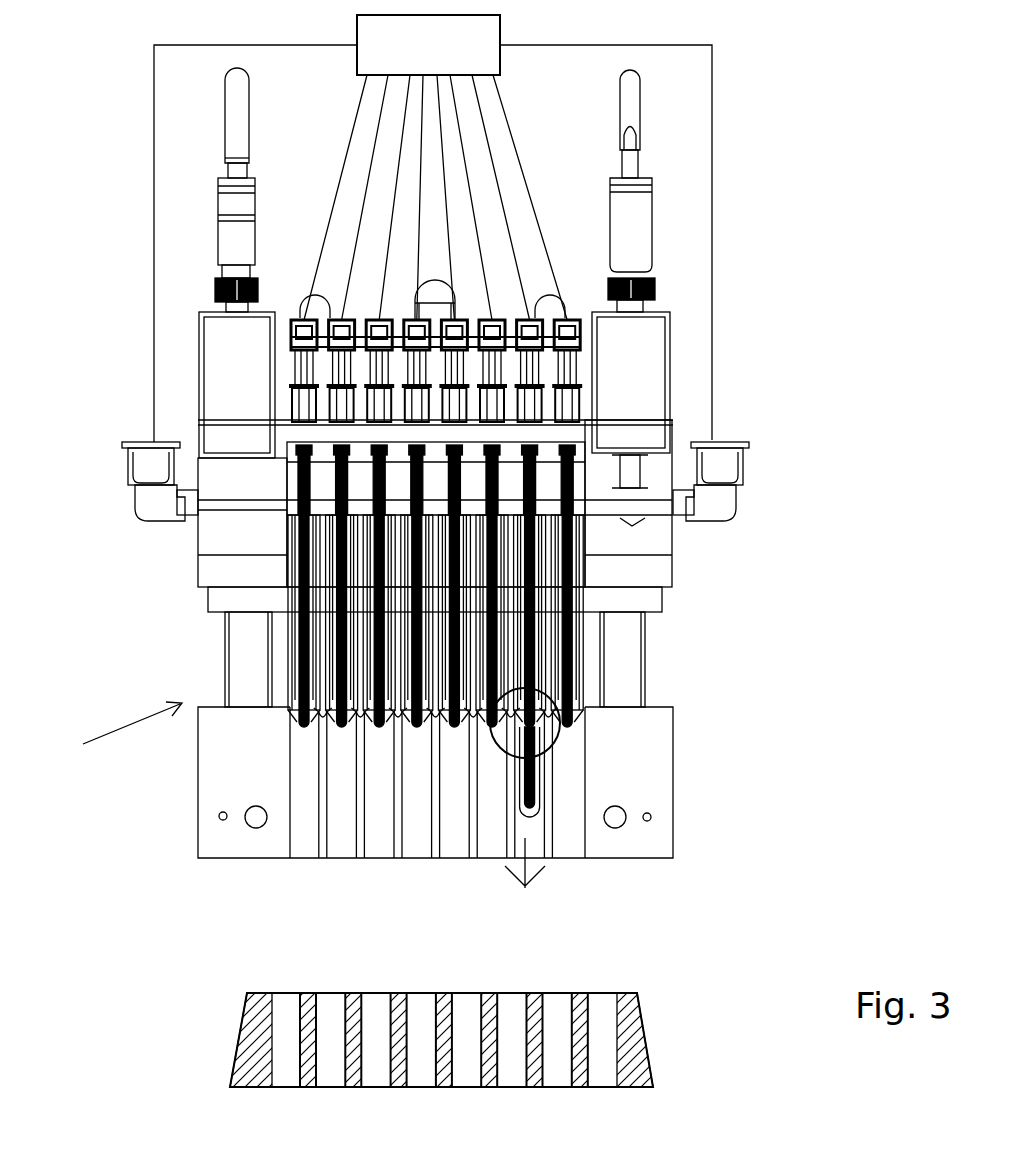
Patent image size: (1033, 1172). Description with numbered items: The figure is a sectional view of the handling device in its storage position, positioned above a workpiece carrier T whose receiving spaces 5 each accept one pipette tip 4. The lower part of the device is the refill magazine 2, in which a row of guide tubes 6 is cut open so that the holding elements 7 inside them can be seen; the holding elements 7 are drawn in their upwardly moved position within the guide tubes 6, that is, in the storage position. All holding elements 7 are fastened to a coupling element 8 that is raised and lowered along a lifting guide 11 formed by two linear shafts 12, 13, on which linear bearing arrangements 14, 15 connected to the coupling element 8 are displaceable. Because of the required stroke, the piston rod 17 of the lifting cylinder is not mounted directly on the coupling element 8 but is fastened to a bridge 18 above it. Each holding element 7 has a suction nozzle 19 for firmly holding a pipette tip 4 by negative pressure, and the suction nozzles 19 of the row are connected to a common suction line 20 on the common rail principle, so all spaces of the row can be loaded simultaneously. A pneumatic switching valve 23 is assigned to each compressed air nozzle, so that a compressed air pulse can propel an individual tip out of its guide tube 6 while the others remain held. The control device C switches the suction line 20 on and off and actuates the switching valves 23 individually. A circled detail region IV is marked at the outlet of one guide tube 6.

The refill magazine 2 is at (653, 743).
The pipette tip 4 is at (543, 783).
The receiving spaces 5 is at (505, 1000).
The guide tube 6 is at (525, 888).
The holding element 7 is at (583, 717).
The coupling element 8 is at (653, 473).
The lifting guide 11 is at (109, 735).
The linear shaft 12 is at (238, 647).
The linear shaft 13 is at (633, 668).
The linear bearing arrangement 14 is at (238, 573).
The linear bearing arrangement 15 is at (653, 565).
The piston rod 17 is at (460, 327).
The bridge 18 is at (353, 317).
The suction nozzle 19 is at (293, 727).
The suction line 20 is at (235, 510).
The pneumatic switching valve 23 is at (567, 325).
The control device C is at (433, 228).
The workpiece carrier T is at (341, 1009).
The detail view marker IV is at (500, 748).